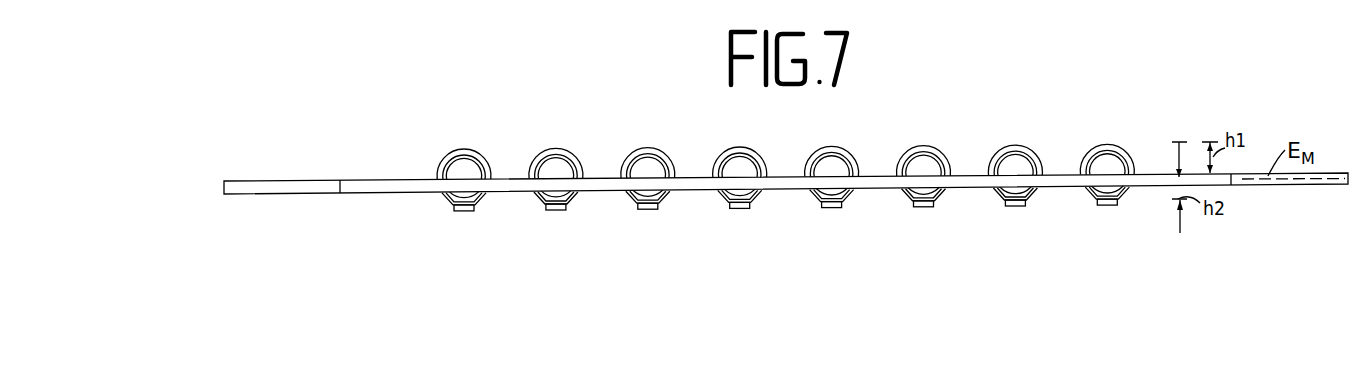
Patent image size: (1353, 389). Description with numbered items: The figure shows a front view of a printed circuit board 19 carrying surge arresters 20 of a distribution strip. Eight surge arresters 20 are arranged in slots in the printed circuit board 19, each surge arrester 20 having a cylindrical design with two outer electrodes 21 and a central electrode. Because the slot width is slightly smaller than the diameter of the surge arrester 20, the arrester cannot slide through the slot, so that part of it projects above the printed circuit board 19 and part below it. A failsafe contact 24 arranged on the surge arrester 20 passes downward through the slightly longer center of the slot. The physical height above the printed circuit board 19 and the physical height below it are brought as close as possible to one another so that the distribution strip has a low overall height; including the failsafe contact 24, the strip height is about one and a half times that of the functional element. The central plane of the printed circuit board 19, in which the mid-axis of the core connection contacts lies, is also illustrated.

The printed circuit board 19 is at (394, 180).
The surge arrester 20 is at (557, 170).
The outer electrode 21 is at (535, 160).
The failsafe contact 24 is at (546, 211).